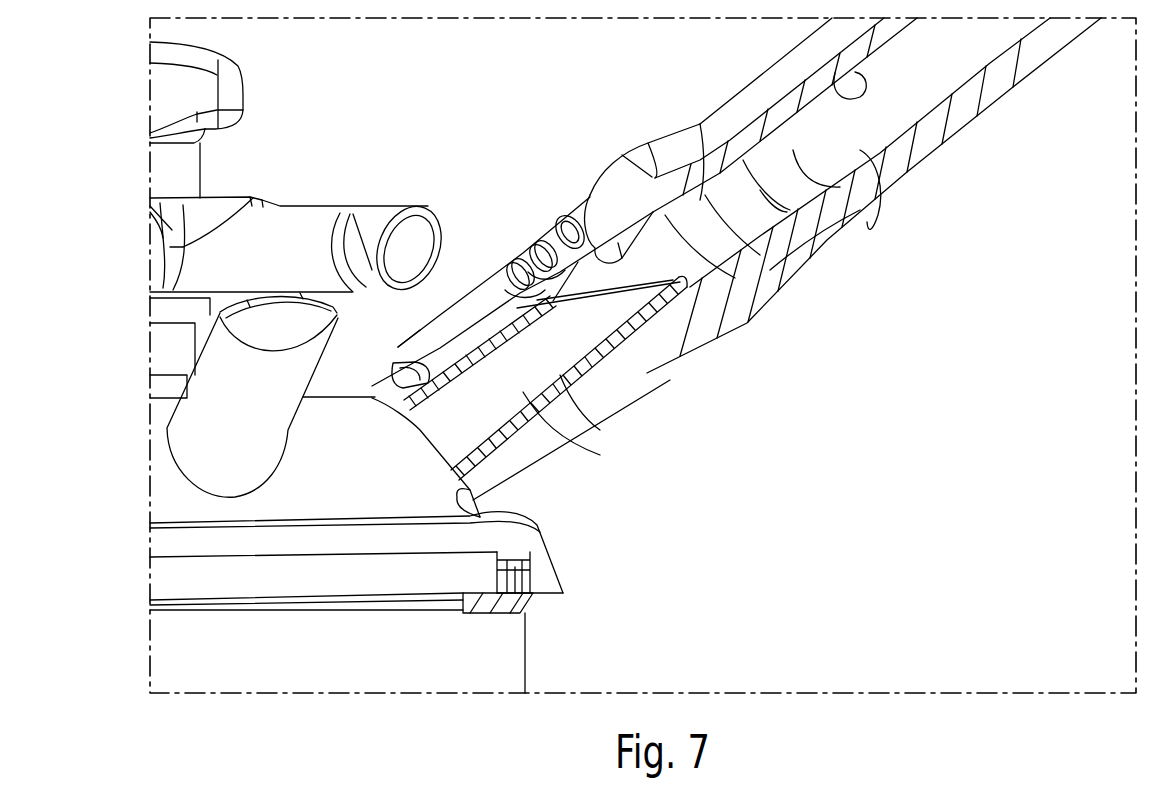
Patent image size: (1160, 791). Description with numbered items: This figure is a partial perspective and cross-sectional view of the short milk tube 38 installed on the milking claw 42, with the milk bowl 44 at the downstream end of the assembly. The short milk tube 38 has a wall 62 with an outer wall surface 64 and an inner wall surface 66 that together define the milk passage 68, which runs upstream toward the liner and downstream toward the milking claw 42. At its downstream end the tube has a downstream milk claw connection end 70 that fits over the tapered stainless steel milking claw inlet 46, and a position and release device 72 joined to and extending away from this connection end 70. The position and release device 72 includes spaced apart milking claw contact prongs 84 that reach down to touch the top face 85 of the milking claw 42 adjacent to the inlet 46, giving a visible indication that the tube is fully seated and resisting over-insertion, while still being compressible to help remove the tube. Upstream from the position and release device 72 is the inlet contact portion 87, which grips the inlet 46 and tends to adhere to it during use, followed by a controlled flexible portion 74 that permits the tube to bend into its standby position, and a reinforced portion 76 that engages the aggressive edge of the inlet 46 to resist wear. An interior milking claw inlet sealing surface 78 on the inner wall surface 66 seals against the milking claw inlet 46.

The short milk tube 38 is at (964, 142).
The milking claw 42 is at (400, 488).
The milk bowl 44 is at (497, 657).
The milking claw inlet 46 is at (258, 443).
The wall 62 is at (783, 110).
The outer wall surface 64 is at (730, 115).
The inner wall surface 66 is at (788, 77).
The milk passage 68 is at (848, 167).
The downstream milk claw connection end 70 is at (430, 367).
The position and release device 72 is at (399, 333).
The controlled flexible portion 74 is at (543, 242).
The reinforced portion 76 is at (625, 180).
The interior milking claw inlet sealing surface 78 is at (578, 212).
The milking claw contact prong 84 is at (383, 377).
The top face 85 is at (372, 398).
The inlet contact portion 87 is at (545, 440).